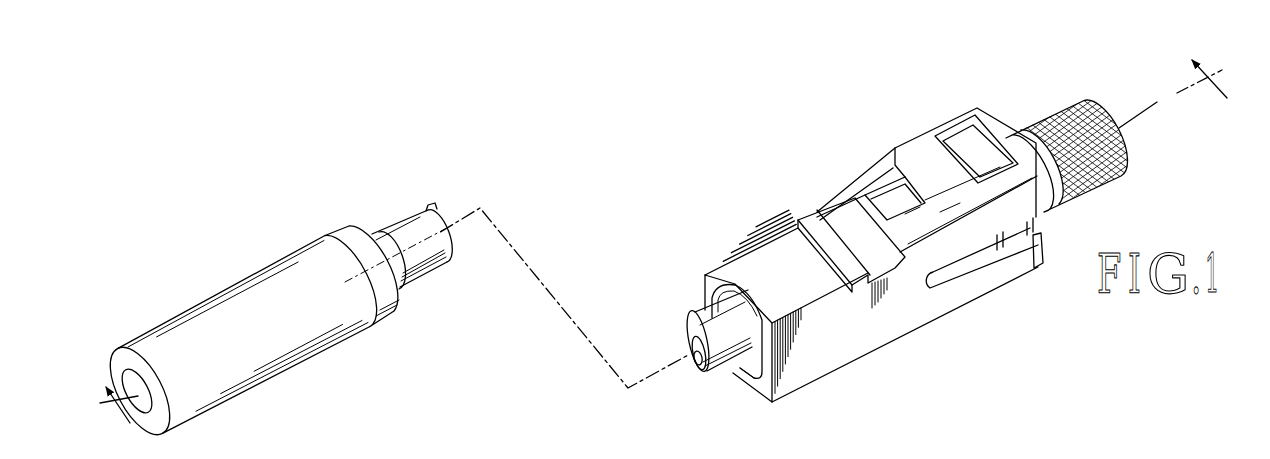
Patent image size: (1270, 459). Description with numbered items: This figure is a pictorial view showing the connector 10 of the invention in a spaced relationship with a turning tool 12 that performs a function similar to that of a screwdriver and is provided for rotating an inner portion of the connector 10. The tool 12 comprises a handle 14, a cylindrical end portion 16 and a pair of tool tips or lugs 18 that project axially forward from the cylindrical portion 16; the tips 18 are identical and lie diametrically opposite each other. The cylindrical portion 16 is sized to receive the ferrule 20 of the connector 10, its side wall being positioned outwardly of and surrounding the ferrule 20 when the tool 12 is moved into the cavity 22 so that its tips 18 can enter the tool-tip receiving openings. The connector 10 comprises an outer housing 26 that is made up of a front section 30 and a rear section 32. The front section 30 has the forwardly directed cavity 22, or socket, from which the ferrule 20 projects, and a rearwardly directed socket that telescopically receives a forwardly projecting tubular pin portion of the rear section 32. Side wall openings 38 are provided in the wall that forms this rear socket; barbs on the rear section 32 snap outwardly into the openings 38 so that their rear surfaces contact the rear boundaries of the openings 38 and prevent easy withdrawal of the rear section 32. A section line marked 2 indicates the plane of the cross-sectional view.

The section line 2- 2 is at (661, 235).
The connector 10 is at (837, 163).
The turning tool 12 is at (250, 343).
The handle 14 is at (278, 283).
The cylindrical end portion 16 is at (430, 262).
The tool tips 18 is at (432, 210).
The ferrule 20 is at (700, 322).
The cavity 22 is at (745, 367).
The outer housing 26 is at (833, 198).
The front section 30 is at (738, 270).
The rear section 32 is at (1050, 186).
The side wall openings 38 is at (955, 160).